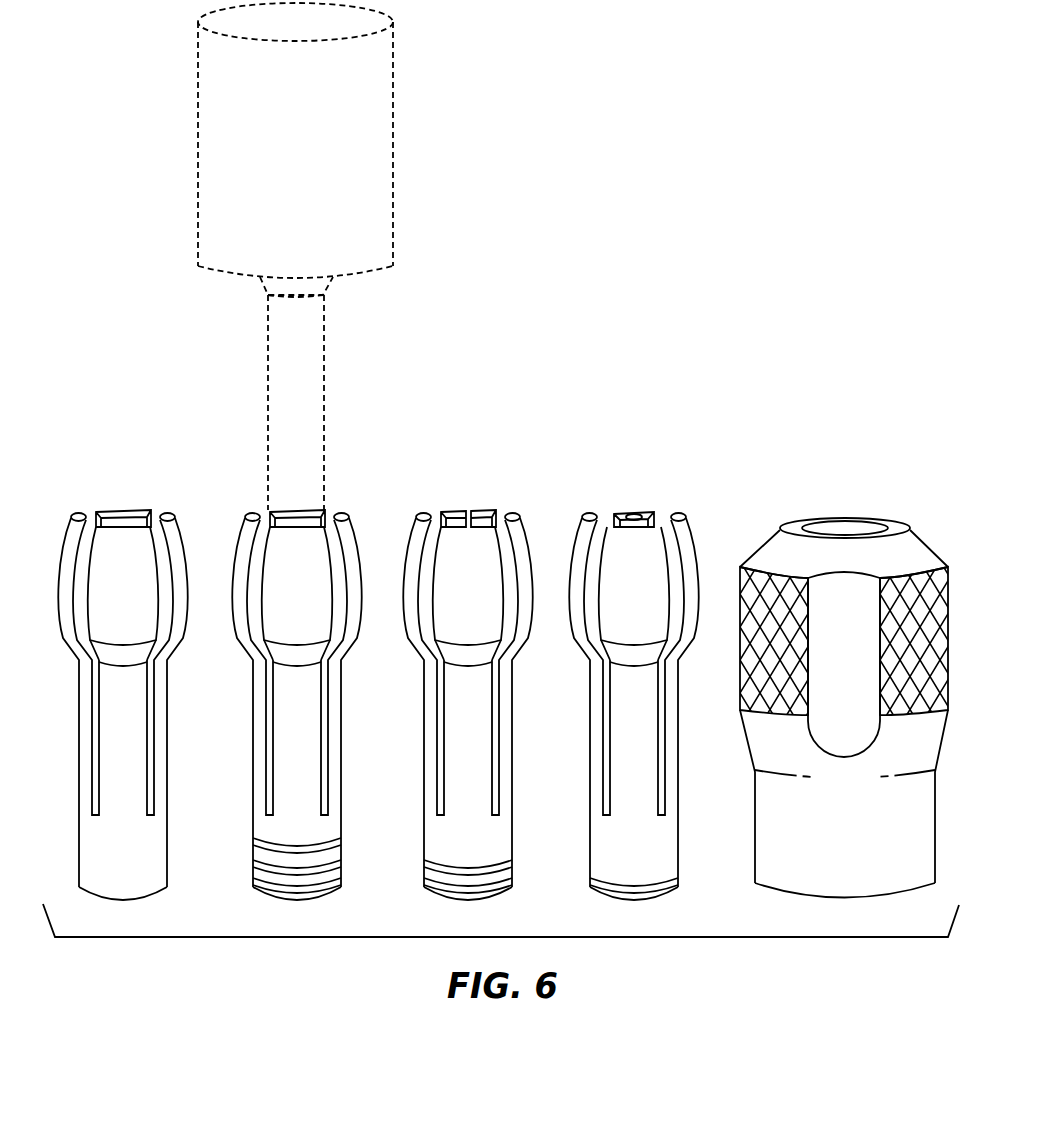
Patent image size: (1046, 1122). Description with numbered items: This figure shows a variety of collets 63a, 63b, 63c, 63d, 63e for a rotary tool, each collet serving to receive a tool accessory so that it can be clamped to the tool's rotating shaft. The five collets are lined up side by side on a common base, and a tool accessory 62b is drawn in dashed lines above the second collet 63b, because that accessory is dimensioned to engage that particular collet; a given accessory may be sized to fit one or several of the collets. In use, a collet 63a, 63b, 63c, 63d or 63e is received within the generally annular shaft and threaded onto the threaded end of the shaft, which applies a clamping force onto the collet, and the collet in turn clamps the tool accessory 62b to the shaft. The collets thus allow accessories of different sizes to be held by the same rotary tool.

The tool accessory 62b is at (393, 238).
The collet 63a is at (128, 522).
The collet 63b is at (335, 513).
The collet 63c is at (483, 528).
The collet 63d is at (638, 518).
The collet 63e is at (847, 532).